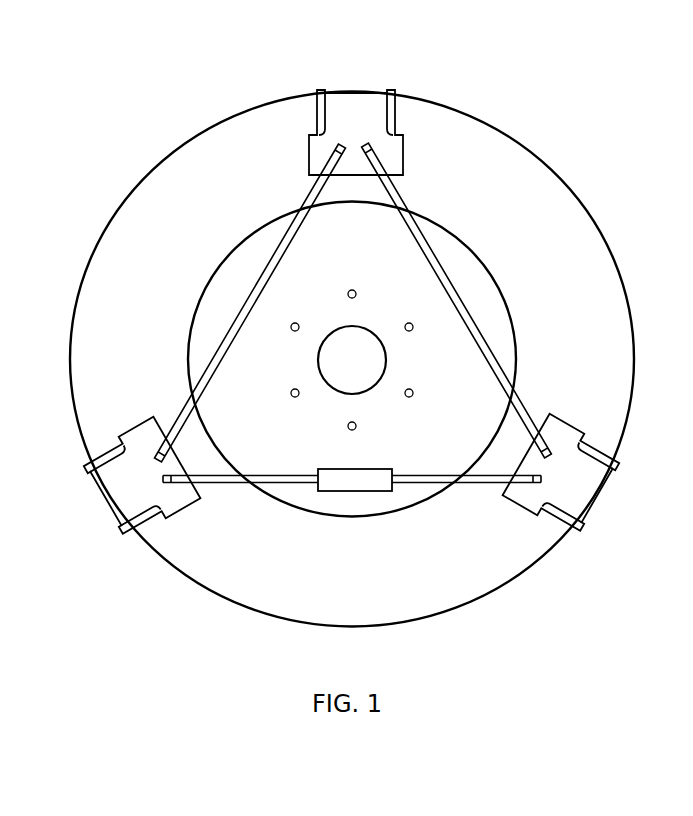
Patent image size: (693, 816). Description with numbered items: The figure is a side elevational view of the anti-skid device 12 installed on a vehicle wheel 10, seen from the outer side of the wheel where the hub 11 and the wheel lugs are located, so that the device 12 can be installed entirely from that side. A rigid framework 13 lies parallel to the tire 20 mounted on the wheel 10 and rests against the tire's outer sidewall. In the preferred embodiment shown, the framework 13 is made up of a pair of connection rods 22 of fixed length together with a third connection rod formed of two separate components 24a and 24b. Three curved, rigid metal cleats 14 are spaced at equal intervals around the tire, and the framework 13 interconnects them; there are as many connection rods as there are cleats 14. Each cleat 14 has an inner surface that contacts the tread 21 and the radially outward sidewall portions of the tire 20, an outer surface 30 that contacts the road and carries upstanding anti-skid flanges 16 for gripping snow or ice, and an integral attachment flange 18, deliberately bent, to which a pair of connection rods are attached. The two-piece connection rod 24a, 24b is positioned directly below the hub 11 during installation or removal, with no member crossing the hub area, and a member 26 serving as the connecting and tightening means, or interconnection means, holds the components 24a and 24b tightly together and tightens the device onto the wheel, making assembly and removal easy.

The vehicle wheel 10 is at (475, 285).
The hub 11 is at (389, 354).
The anti-skid device 12 is at (565, 527).
The rigid framework 13 is at (478, 325).
The cleats 14 is at (394, 142).
The anti-skid flanges 16 is at (319, 91).
The integral attachment flange 18 is at (352, 176).
The tire 20 is at (202, 161).
The tread 21 is at (237, 116).
The connection rods 22 is at (270, 262).
The connection rod component 24a is at (235, 486).
The connection rod component 24b is at (427, 486).
The interconnection means 26 is at (332, 491).
The outer surface 30 is at (335, 92).